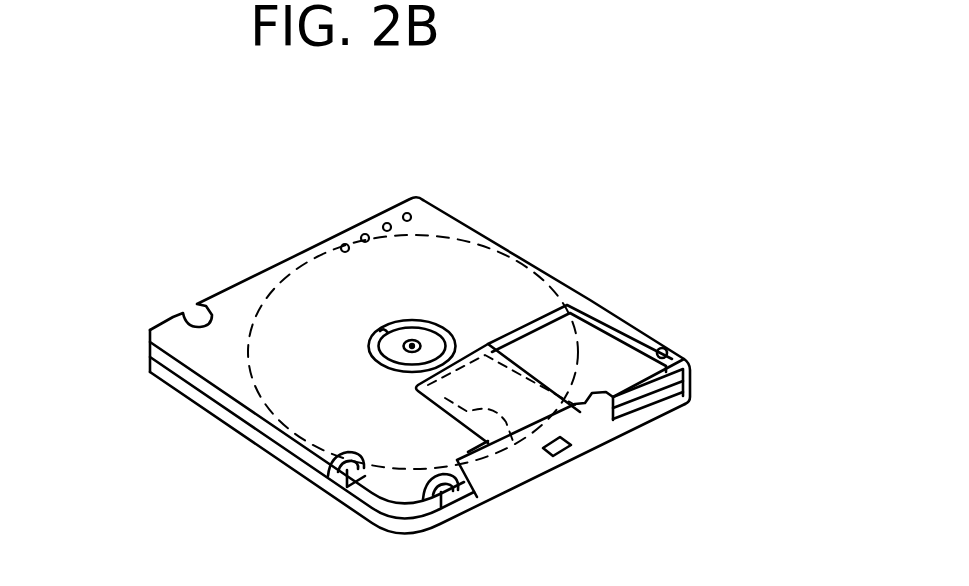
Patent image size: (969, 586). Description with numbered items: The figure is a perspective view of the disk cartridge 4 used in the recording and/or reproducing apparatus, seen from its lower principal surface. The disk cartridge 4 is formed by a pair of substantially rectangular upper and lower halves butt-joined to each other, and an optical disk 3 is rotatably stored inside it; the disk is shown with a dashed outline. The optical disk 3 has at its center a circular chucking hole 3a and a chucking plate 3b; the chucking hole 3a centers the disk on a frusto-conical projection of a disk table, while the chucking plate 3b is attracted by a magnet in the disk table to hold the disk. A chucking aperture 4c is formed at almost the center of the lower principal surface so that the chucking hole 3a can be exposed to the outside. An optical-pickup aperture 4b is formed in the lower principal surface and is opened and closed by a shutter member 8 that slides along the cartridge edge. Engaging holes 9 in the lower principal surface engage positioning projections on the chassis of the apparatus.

The optical disk 3 is at (311, 292).
The chucking hole 3a is at (413, 343).
The chucking plate 3b is at (432, 339).
The disk cartridge 4 is at (170, 341).
The optical-pickup aperture 4b is at (500, 417).
The chucking aperture 4c is at (376, 328).
The shutter member 8 is at (586, 437).
The engaging holes 9 is at (663, 348).